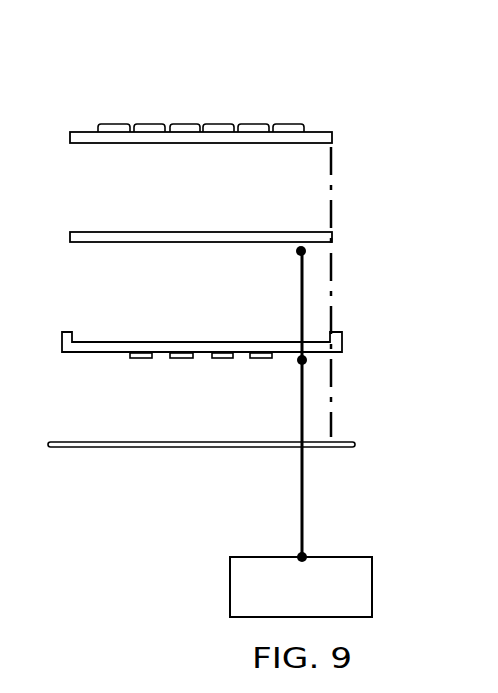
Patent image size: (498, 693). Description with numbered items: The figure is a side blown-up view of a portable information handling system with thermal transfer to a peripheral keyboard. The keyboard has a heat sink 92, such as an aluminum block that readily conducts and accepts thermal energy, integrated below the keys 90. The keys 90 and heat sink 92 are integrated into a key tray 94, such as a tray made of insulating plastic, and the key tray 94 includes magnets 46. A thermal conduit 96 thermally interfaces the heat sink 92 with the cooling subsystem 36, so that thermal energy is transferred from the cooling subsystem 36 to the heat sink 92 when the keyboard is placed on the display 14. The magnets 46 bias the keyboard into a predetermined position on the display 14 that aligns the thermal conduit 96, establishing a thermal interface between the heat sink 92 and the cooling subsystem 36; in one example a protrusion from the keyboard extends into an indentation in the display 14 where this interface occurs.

The keys 90 is at (308, 115).
The heat sink 92 is at (201, 232).
The key tray 94 is at (107, 342).
The magnets 46 is at (125, 363).
The display 14 is at (152, 448).
The thermal conduit 96 is at (303, 468).
The cooling subsystem 36 is at (372, 587).